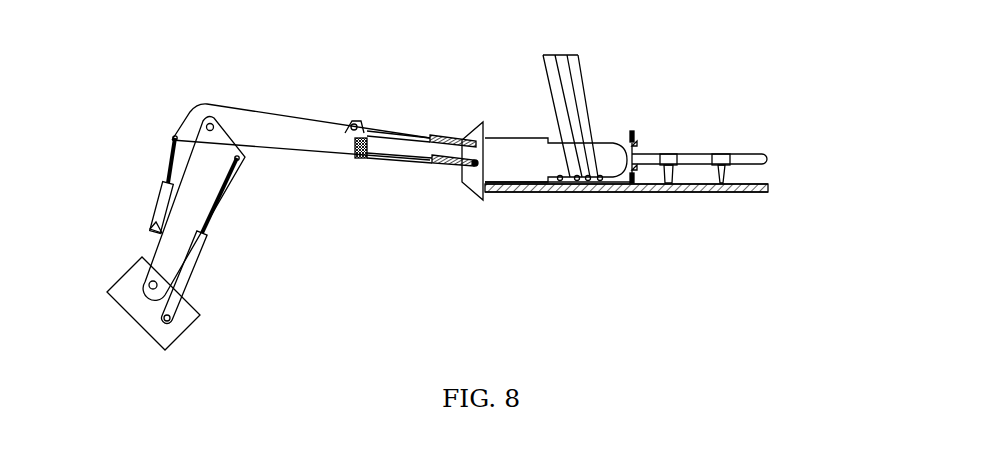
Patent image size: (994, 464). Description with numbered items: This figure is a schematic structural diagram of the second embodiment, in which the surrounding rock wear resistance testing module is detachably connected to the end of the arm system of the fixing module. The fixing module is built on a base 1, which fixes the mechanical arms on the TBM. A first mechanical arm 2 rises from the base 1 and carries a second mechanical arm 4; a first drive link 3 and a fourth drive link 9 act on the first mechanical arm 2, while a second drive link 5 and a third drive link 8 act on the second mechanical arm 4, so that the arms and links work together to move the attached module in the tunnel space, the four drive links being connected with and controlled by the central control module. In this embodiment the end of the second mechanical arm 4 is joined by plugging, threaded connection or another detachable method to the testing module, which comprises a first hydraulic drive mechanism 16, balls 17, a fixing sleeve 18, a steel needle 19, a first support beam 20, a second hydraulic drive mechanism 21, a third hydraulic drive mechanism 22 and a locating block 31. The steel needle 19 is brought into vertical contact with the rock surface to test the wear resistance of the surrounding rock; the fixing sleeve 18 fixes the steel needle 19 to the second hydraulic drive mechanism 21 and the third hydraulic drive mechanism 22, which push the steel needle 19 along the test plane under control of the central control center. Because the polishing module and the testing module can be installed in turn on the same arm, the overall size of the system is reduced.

The base 1 is at (120, 292).
The first mechanical arm 2 is at (158, 262).
The first drive link 3 is at (168, 170).
The second mechanical arm 4 is at (280, 137).
The second drive link 5 is at (400, 137).
The third drive link 8 is at (392, 153).
The fourth drive link 9 is at (197, 250).
The first hydraulic drive mechanism 16 is at (535, 152).
The balls 17 is at (543, 55).
The fixing sleeve 18 is at (667, 158).
The steel needle 19 is at (768, 162).
The first support beam 20 is at (768, 188).
The second hydraulic drive mechanism 21 is at (737, 188).
The third hydraulic drive mechanism 22 is at (688, 190).
The locating block 31 is at (637, 150).